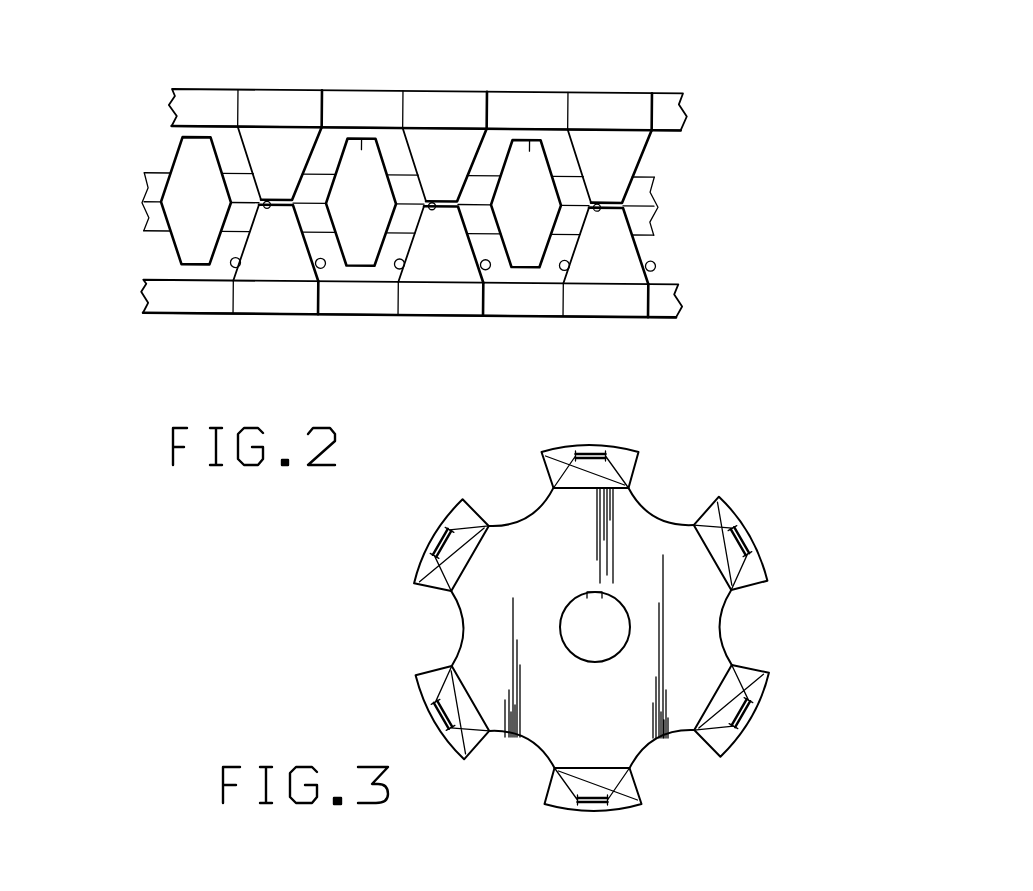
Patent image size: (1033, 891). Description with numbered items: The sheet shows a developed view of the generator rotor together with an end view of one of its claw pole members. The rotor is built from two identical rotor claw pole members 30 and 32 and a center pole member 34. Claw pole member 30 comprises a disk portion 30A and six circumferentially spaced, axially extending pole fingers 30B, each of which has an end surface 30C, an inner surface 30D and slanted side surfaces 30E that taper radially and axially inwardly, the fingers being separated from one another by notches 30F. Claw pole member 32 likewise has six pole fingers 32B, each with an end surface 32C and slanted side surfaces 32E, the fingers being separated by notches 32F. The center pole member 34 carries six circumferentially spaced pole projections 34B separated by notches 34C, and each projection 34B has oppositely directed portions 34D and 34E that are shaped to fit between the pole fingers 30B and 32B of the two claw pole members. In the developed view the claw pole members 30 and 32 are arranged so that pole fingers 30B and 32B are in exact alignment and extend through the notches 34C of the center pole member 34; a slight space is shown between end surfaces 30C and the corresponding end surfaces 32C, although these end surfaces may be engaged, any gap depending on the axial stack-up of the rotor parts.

In FIG. 2, the rotor claw pole member 30 is at (376, 317).
In FIG. 3, the rotor claw pole member 30 is at (648, 480).
In FIG. 3, the disk portion 30A is at (687, 713).
In FIG. 2, the pole fingers 30B is at (306, 296).
In FIG. 3, the pole fingers 30B is at (584, 450).
In FIG. 2, the end surface 30C is at (316, 170).
In FIG. 3, the end surface 30C is at (600, 447).
In FIG. 3, the inner surface 30D is at (622, 458).
In FIG. 2, the slanted side surfaces 30E is at (318, 268).
In FIG. 3, the slanted side surfaces 30E is at (437, 522).
In FIG. 2, the notches 30F is at (207, 305).
In FIG. 3, the notches 30F is at (517, 516).
In FIG. 2, the rotor claw pole member 32 is at (298, 87).
In FIG. 2, the pole fingers 32B is at (245, 134).
In FIG. 2, the end surface 32C is at (236, 163).
In FIG. 2, the slanted side surfaces 32E is at (340, 124).
In FIG. 2, the notches 32F is at (213, 100).
In FIG. 2, the center pole member 34 is at (563, 160).
In FIG. 2, the pole projections 34B is at (180, 243).
In FIG. 2, the notches 34C is at (480, 198).
In FIG. 2, the oppositely directed portion 34D is at (193, 150).
In FIG. 2, the oppositely directed portion 34E is at (198, 264).